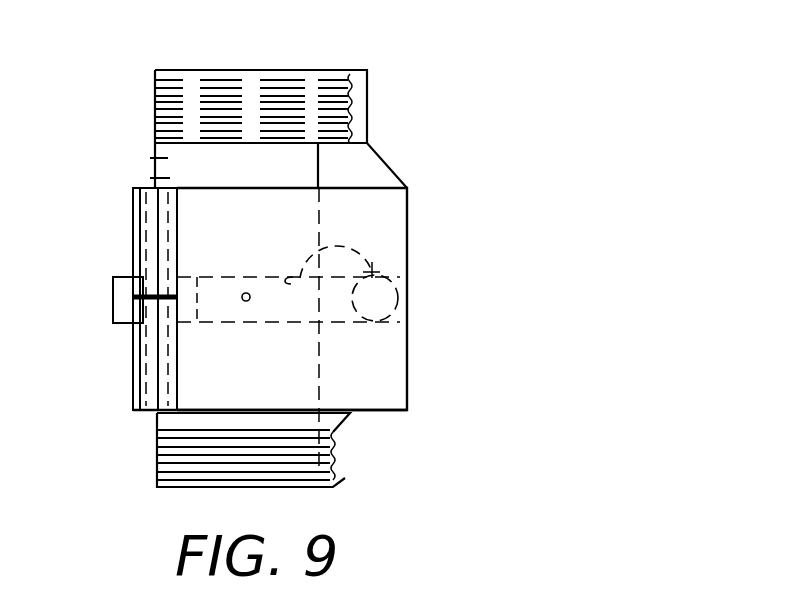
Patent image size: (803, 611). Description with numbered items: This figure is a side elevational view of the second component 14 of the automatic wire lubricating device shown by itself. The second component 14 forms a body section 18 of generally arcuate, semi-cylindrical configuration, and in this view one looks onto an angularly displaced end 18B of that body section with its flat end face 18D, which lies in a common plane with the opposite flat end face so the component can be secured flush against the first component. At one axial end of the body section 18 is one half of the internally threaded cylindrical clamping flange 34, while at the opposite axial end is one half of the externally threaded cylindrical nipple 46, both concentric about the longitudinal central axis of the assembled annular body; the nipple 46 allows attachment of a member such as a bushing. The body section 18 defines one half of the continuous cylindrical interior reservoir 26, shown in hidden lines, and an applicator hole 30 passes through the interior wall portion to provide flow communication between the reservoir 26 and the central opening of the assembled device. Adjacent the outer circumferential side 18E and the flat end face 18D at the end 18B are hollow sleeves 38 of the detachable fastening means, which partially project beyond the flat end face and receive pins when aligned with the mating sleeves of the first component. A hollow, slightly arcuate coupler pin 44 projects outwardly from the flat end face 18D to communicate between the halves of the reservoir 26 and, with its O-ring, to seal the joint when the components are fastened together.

The second component 14 is at (392, 62).
The internally threaded cylindrical clamping flange 34 is at (367, 109).
The body section 18 is at (408, 233).
The angularly displaced end 18B is at (158, 158).
The flat end face 18D is at (160, 178).
The outer circumferential side 18E is at (408, 362).
The sleeves 38 is at (170, 232).
The coupler pin 44 is at (120, 276).
The interior reservoir 26 is at (341, 273).
The applicator hole 30 is at (250, 300).
The externally threaded cylindrical nipple 46 is at (336, 462).